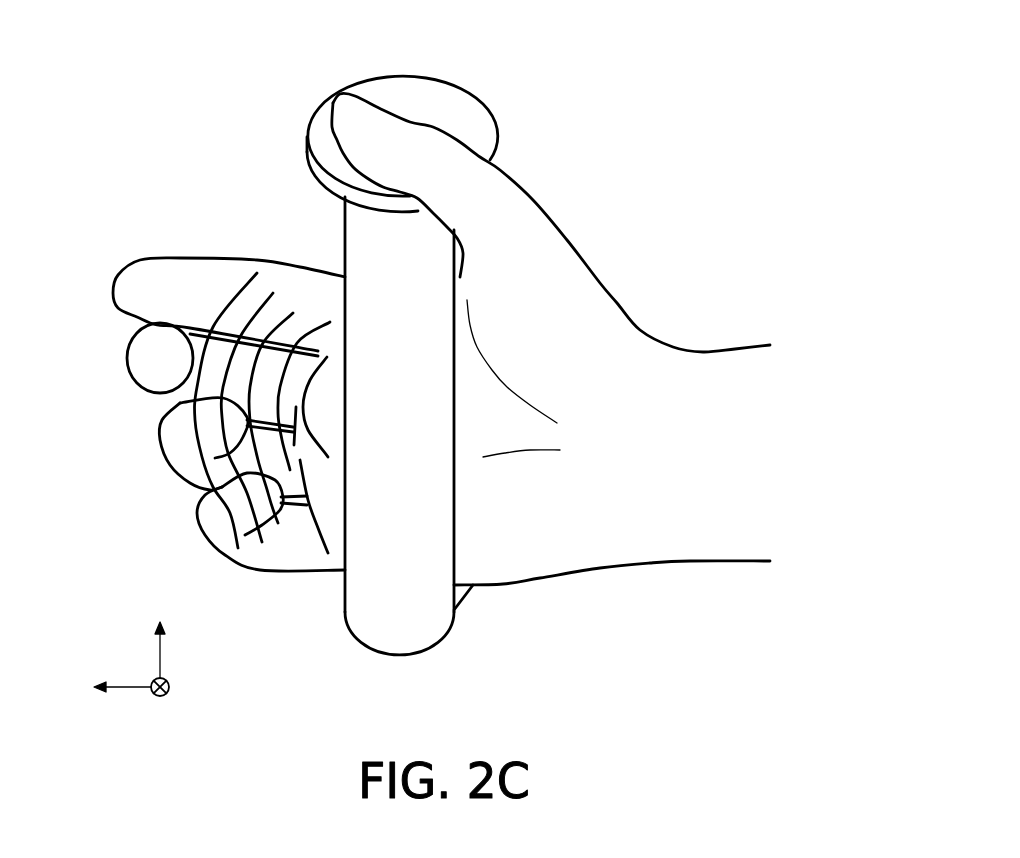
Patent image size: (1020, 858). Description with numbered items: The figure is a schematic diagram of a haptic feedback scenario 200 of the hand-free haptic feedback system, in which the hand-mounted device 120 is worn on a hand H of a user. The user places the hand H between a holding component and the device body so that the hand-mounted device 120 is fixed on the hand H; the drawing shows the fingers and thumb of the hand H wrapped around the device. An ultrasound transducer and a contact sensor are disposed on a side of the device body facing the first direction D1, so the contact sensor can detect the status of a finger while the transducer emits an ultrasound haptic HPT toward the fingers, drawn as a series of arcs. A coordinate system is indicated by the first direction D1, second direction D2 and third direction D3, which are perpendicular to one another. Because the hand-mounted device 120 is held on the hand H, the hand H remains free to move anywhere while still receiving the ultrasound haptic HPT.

The hand-mounted device 120 is at (420, 90).
The haptic feedback scenario 200 is at (805, 692).
The hand H is at (545, 222).
The ultrasound haptic HPT is at (260, 250).
The first direction D1 is at (107, 685).
The second direction D2 is at (179, 686).
The third direction D3 is at (158, 629).